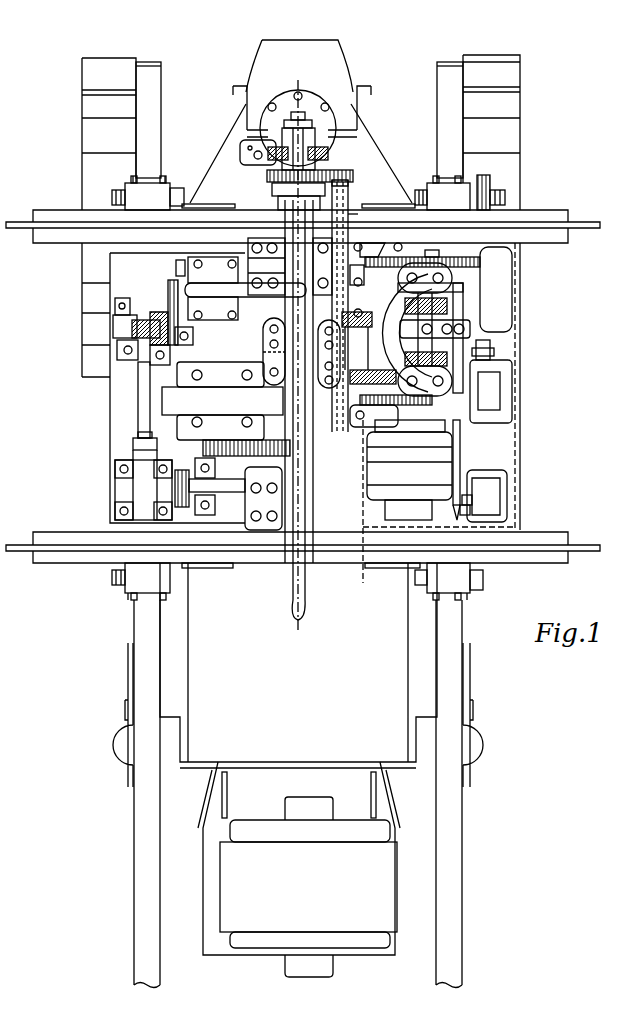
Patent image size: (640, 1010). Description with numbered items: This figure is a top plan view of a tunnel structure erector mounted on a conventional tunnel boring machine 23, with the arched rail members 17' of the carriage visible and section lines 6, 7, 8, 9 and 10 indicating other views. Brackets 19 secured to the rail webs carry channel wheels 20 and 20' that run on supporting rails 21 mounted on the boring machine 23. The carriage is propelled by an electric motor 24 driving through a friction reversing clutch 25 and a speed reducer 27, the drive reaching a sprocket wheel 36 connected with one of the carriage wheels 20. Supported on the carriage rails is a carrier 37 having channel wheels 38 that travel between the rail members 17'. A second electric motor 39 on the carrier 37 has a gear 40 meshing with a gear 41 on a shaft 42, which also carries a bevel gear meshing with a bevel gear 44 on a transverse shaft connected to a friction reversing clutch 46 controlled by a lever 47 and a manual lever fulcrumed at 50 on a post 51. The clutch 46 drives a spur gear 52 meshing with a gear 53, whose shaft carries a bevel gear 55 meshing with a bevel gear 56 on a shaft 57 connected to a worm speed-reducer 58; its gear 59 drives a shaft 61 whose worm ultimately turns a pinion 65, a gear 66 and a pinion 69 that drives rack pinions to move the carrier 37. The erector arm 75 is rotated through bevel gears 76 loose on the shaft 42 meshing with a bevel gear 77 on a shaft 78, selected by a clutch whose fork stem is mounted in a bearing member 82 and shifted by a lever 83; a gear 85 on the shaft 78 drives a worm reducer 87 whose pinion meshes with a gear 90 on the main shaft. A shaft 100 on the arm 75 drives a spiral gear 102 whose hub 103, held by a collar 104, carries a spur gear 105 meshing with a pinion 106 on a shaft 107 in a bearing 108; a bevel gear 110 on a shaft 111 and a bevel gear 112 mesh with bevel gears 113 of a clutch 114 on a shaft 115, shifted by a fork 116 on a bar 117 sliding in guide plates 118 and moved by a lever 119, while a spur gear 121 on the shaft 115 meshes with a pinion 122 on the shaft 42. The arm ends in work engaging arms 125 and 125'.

The section line 6- 6 is at (310, 85).
The section line 7- 7 is at (63, 360).
The section line 8- 8 is at (60, 480).
The section line 9- 9 is at (356, 168).
The section line 10- 10 is at (55, 432).
The arched rail member 17' is at (303, 400).
The bracket 19 is at (140, 196).
The channel wheel 20 is at (295, 381).
The bearing cap 20' is at (162, 171).
The supporting rail 21 is at (137, 622).
The tunnel boring machine 23 is at (332, 53).
The electric motor 24 is at (508, 485).
The friction reversing clutch 25 is at (513, 386).
The speed reducer 27 is at (512, 291).
The sprocket wheel 36 is at (507, 197).
The carrier 37 is at (122, 266).
The channel wheel 38 is at (221, 208).
The second electric motor 39 is at (409, 470).
The gear 40 is at (424, 405).
The gear 41 is at (374, 346).
The shaft 42 is at (378, 278).
The bevel gear 44 is at (415, 329).
The friction reversing clutch 46 is at (241, 288).
The lever 47 is at (192, 287).
The fulcrum 50 is at (309, 240).
The support post 51 is at (285, 240).
The spur gear 52 is at (172, 282).
The gear 53 is at (166, 312).
The bevel gear 55 is at (160, 320).
The bevel gear 56 is at (113, 334).
The shaft 57 is at (140, 392).
The worm speed-reducer 58 is at (143, 485).
The gear 59 is at (160, 452).
The shaft 61 is at (228, 492).
The pinion 65 is at (255, 313).
The gear 66 is at (275, 420).
The pinion 69 is at (232, 473).
The erector arm 75 is at (389, 367).
The bevel gear 76 is at (352, 384).
The bevel gear 77 is at (328, 360).
The shaft 78 is at (263, 352).
The bearing member 82 is at (526, 455).
The lever 83 is at (470, 503).
The gear 85 is at (275, 313).
The worm reducer 87 is at (222, 401).
The gear 90 is at (263, 492).
The shaft 100 is at (246, 150).
The spiral gear 102 is at (318, 147).
The hub 103 is at (351, 174).
The collar 104 is at (278, 200).
The spur gear 105 is at (272, 190).
The pinion 106 is at (350, 188).
The shaft 107 is at (350, 202).
The bearing 108 is at (353, 216).
The bevel gear 110 is at (385, 326).
The shaft 111 is at (344, 336).
The bevel gear 112 is at (364, 354).
The bevel gear 113 is at (450, 303).
The clutch 114 is at (450, 318).
The shaft 115 is at (432, 258).
The shifting fork 116 is at (466, 330).
The bar 117 is at (495, 348).
The slotted guide plate 118 is at (448, 288).
The lever 119 is at (469, 512).
The spur gear 121 is at (412, 258).
The pinion 122 is at (373, 236).
The work engaging arm 125 is at (223, 108).
The work engaging arm 125' is at (381, 108).